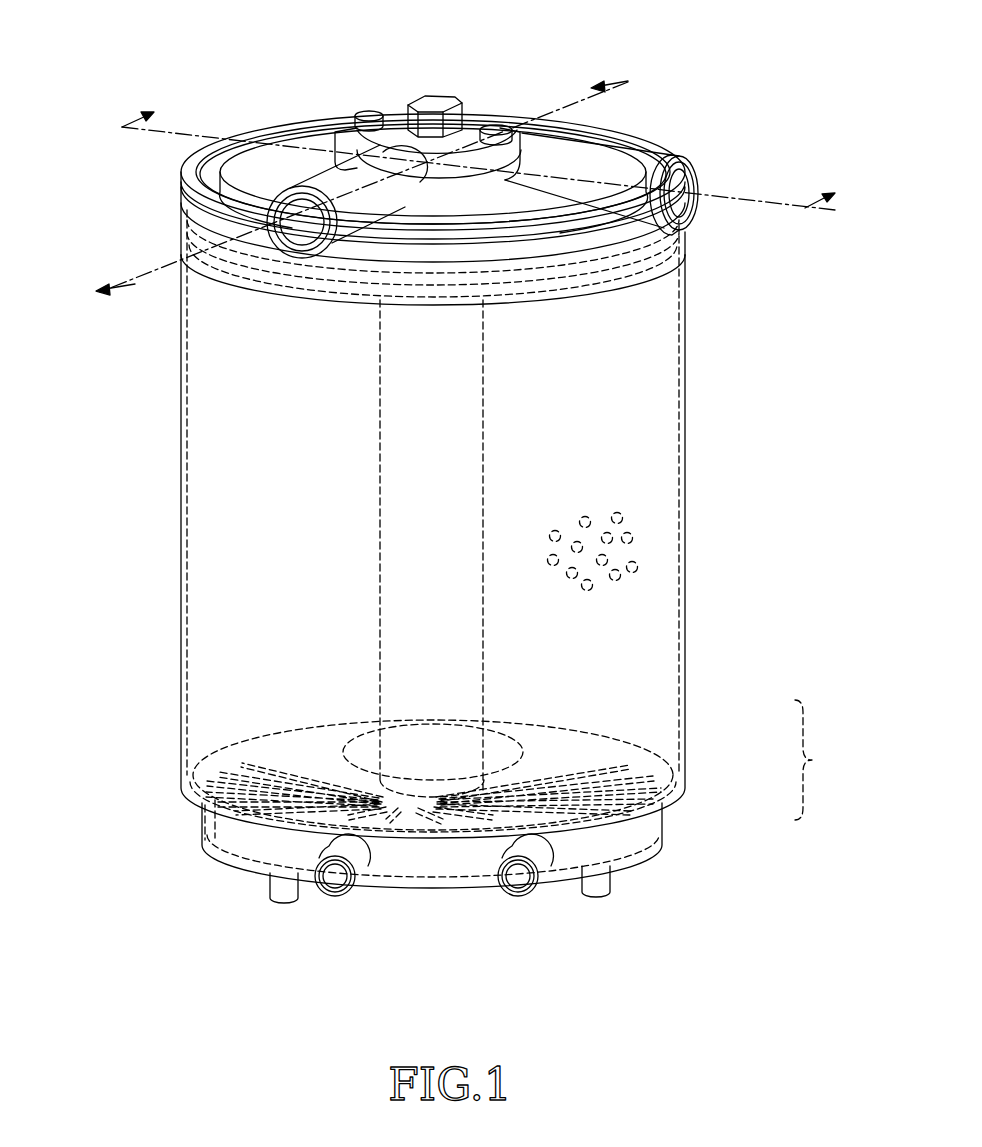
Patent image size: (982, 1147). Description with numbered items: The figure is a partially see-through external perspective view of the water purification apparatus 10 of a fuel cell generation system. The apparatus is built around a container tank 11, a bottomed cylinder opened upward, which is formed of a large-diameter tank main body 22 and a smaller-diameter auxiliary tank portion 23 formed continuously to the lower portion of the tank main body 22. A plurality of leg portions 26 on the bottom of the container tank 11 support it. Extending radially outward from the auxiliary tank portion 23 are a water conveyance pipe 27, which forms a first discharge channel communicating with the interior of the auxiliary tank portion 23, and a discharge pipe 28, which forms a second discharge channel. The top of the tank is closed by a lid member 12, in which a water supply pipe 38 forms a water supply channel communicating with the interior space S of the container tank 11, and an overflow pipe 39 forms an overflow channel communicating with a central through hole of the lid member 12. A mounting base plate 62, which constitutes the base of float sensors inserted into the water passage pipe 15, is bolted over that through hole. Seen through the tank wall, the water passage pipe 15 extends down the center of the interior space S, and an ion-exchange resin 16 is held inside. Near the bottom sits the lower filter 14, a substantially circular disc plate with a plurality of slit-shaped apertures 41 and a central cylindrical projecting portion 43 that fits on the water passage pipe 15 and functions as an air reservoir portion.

The water purification apparatus 10 is at (461, 497).
The container tank 11 is at (820, 760).
The lid member 12 is at (668, 142).
The lower filter 14 is at (213, 752).
The water passage pipe 15 is at (468, 466).
The ion-exchange resin 16 is at (637, 566).
The tank main body 22 is at (688, 702).
The auxiliary tank portion 23 is at (664, 822).
The leg portions 26 is at (268, 893).
The water conveyance pipe 27 is at (340, 884).
The discharge pipe 28 is at (530, 892).
The water supply pipe 38 is at (692, 186).
The overflow pipe 39 is at (288, 222).
The slit-shaped apertures 41 is at (208, 838).
The projecting portion 43 is at (343, 752).
The mounting base plate 62 is at (393, 132).
The interior space S is at (632, 413).